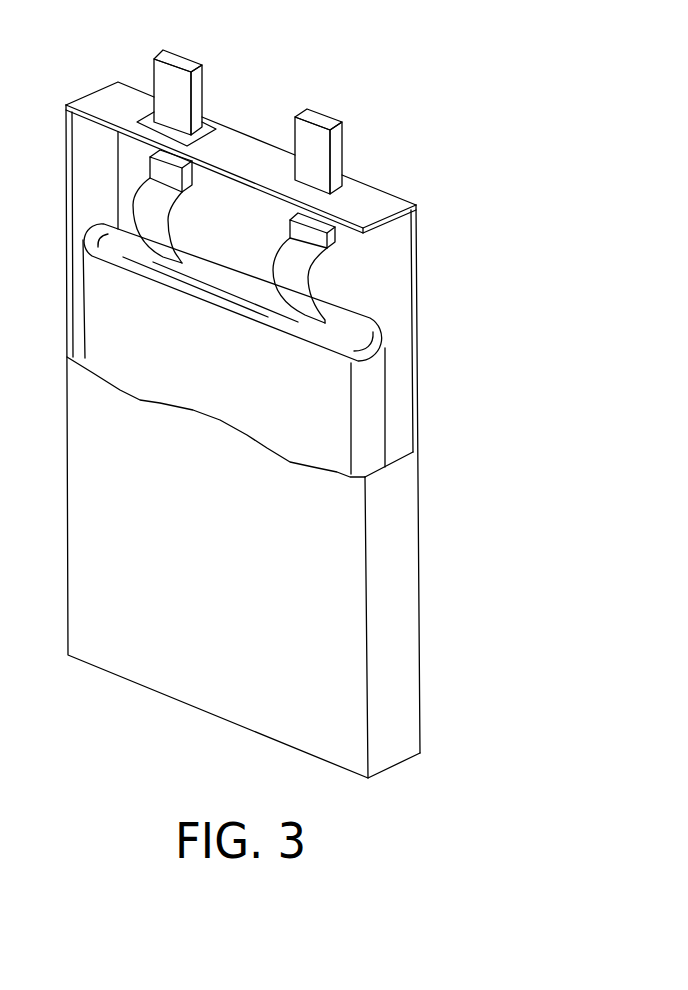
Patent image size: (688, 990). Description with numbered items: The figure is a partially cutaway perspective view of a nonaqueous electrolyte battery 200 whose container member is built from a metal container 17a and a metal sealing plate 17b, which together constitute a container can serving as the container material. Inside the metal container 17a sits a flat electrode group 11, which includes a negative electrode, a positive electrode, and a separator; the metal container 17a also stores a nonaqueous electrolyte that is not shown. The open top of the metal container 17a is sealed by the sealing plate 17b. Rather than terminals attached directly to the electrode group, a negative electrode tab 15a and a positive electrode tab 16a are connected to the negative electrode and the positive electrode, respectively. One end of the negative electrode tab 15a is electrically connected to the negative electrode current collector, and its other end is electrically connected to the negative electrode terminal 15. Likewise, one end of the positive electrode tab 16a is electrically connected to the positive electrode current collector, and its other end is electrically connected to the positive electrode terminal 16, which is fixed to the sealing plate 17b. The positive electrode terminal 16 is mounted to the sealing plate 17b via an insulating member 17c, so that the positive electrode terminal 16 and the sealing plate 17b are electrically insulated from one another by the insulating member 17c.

The nonaqueous electrolyte battery 200 is at (321, 414).
The electrode group 11 is at (395, 362).
The negative electrode terminal 15 is at (340, 148).
The negative electrode tab 15a is at (297, 283).
The positive electrode terminal 16 is at (195, 84).
The positive electrode tab 16a is at (155, 220).
The metal container 17a is at (400, 582).
The sealing plate 17b is at (357, 195).
The insulating member 17c is at (210, 129).